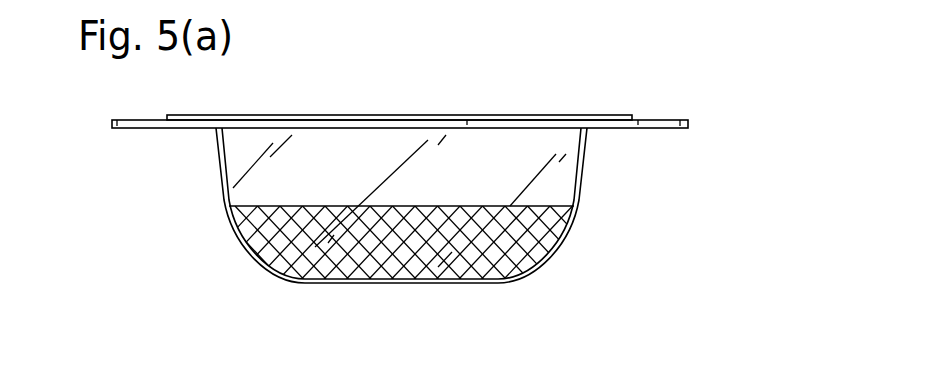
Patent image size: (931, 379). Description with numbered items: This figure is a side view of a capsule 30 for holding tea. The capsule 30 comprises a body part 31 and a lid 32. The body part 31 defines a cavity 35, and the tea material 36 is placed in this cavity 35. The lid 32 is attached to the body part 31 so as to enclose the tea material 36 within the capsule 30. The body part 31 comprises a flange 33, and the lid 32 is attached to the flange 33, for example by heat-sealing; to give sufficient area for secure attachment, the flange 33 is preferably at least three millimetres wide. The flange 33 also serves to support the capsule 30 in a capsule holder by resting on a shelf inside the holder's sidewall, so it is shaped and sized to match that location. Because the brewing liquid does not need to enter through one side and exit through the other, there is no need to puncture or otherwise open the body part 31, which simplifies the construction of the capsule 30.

The capsule 30 is at (642, 68).
The body part 31 is at (245, 252).
The lid 32 is at (270, 114).
The flange 33 is at (125, 125).
The cavity 35 is at (378, 164).
The tea material 36 is at (537, 237).